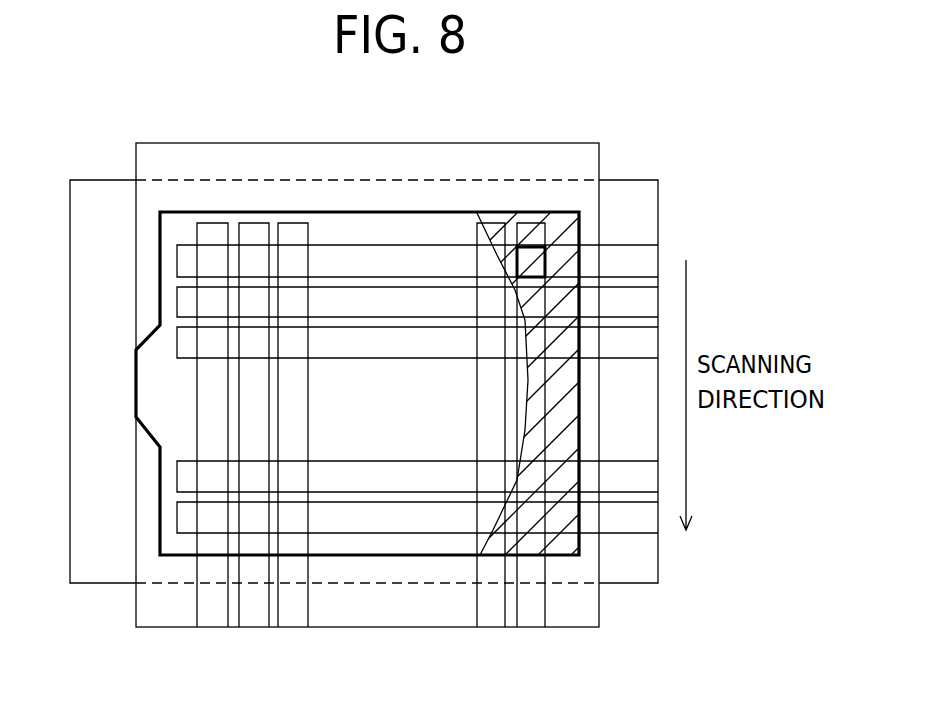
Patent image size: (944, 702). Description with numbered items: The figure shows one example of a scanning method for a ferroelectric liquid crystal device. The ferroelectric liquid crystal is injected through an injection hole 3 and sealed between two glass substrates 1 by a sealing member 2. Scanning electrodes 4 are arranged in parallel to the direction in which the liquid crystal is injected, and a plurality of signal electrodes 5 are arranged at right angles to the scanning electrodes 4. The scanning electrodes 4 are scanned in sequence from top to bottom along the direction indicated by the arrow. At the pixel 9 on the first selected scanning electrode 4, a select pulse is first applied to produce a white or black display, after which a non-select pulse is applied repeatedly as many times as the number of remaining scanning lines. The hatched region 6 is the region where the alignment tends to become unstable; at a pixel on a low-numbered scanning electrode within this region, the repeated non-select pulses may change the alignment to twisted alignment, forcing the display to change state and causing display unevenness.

The glass substrate 1 is at (70, 566).
The sealing member 2 is at (378, 212).
The injection hole 3 is at (134, 375).
The scanning electrode 4 is at (627, 520).
The signal electrode 5 is at (533, 605).
The region where alignment tends to become unstable 6 is at (565, 229).
The pixel 9 is at (537, 262).